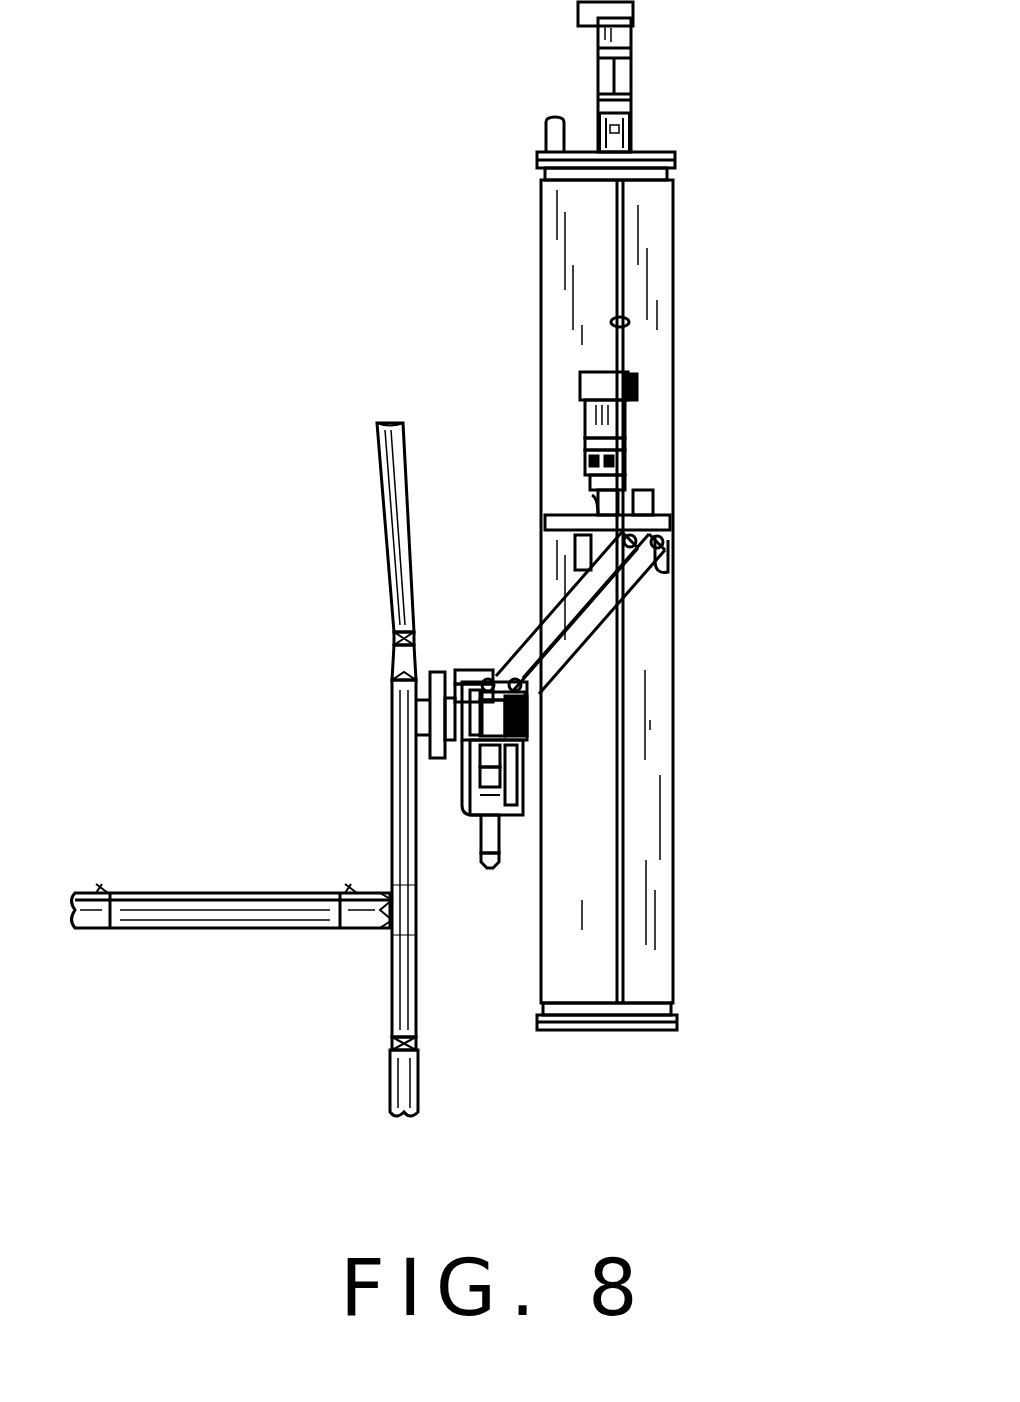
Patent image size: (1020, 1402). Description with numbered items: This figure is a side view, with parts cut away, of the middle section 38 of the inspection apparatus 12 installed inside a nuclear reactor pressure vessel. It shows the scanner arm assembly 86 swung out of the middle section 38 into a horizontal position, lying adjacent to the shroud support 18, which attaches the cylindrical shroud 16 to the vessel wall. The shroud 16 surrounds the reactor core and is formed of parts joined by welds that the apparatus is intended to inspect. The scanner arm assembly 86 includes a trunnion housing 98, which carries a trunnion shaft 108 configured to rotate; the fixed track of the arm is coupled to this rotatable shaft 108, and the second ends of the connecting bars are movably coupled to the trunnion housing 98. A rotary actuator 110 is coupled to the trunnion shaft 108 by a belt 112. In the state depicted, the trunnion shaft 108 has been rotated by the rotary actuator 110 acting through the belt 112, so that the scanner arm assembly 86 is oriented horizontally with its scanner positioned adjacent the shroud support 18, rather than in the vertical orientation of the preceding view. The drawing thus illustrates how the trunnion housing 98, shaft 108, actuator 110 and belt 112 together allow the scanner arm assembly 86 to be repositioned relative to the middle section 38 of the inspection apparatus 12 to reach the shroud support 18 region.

The inspection apparatus 12 is at (738, 258).
The middle section 38 is at (678, 395).
The scanner arm assembly 86 is at (468, 604).
The shroud 16 is at (378, 540).
The shroud support 18 is at (422, 914).
The belt 112 is at (463, 773).
The trunnion shaft 108 is at (522, 696).
The trunnion housing 98 is at (520, 752).
The rotary actuator 110 is at (500, 835).